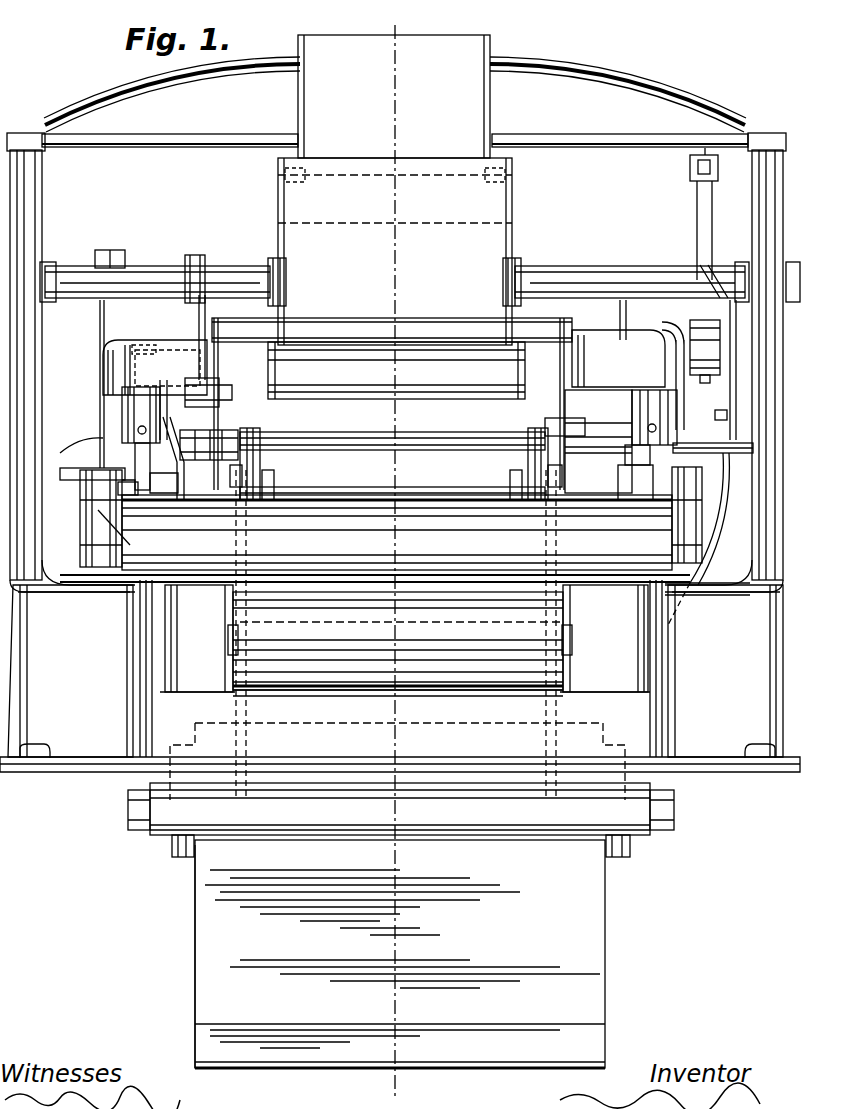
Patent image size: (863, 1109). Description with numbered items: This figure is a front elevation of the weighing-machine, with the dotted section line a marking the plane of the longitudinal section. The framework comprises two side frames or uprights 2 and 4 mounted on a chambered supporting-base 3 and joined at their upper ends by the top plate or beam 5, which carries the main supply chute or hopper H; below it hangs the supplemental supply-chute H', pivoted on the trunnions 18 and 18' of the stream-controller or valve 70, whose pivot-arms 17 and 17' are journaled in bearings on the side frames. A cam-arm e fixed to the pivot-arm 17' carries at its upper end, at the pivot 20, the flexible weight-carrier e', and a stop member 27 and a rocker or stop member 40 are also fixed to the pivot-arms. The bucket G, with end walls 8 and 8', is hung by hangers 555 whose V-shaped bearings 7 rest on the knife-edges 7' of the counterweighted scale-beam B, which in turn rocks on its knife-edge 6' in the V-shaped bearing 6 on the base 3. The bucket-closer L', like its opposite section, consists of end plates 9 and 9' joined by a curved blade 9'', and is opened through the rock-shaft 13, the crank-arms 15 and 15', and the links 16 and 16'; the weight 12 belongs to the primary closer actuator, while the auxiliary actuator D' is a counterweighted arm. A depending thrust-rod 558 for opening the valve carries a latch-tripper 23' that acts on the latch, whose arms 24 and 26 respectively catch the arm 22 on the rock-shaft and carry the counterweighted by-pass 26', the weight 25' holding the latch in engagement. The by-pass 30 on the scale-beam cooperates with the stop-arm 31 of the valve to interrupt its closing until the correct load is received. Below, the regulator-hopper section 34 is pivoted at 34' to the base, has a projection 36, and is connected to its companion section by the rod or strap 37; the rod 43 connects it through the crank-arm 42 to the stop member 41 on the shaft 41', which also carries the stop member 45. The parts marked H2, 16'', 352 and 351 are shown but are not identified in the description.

The section line a is at (393, 556).
The side frame 2 is at (40, 330).
The chambered supporting-base 3 is at (400, 676).
The side frame 4 is at (752, 214).
The top plate 5 is at (395, 102).
The main supply chute H is at (394, 96).
The supplemental supply-chute H' is at (395, 251).
The lower receptacle H2 is at (177, 956).
The pivot-arm 17 is at (155, 268).
The pivot-arm 17' is at (657, 268).
The stop member 27 is at (195, 255).
The by-pass 26' is at (173, 251).
The trunnion 18 is at (292, 273).
The trunnion 18' is at (493, 273).
The rocker or stop member 40 is at (700, 265).
The pivotal connection 20 is at (690, 163).
The cam-arm e is at (690, 230).
The flexible weight-carrier e' is at (695, 134).
The stream-controller or valve 70 is at (430, 395).
The rock-shaft 13 is at (372, 432).
The crank-arm 15 is at (268, 452).
The crank-arm 15' is at (523, 452).
The link 16 is at (392, 473).
The link 16' is at (223, 471).
The rail bracket 16'' is at (577, 470).
The end plate 9 is at (243, 562).
The end plate 9' is at (541, 562).
The curved blade 9'' is at (398, 682).
The end wall 8 is at (217, 431).
The end wall 8' is at (558, 415).
The latch-engaging arm 22 is at (200, 468).
The hanger 555 is at (103, 365).
The latch-tripper 23' is at (148, 331).
The latch arm 26 is at (181, 337).
The weight 25' is at (225, 383).
The thrust-rod 558 is at (100, 410).
The latch arm 24 is at (135, 430).
The V-shaped bearing 7 is at (80, 456).
The knife-edge 7' is at (624, 455).
The scale-beam B is at (80, 485).
The V-shaped bearing 6 is at (375, 538).
The knife-edge 6' is at (355, 487).
The bracket 352 is at (128, 500).
The bracket 351 is at (136, 531).
The stop-arm 31 is at (620, 312).
The stop member 41 is at (687, 333).
The stop member 45 is at (676, 350).
The crank-arm 42 is at (715, 412).
The weight 12 is at (715, 453).
The shaft 41' is at (637, 416).
The by-pass 30 is at (600, 415).
The auxiliary actuator D' is at (687, 515).
The connecting-rod 43 is at (712, 528).
The bucket G is at (405, 638).
The bucket-closer L' is at (398, 640).
The regulator-hopper section 34 is at (400, 925).
The pivot 34' is at (399, 809).
The connecting rod or strap 37 is at (172, 848).
The projection 36 is at (345, 1052).